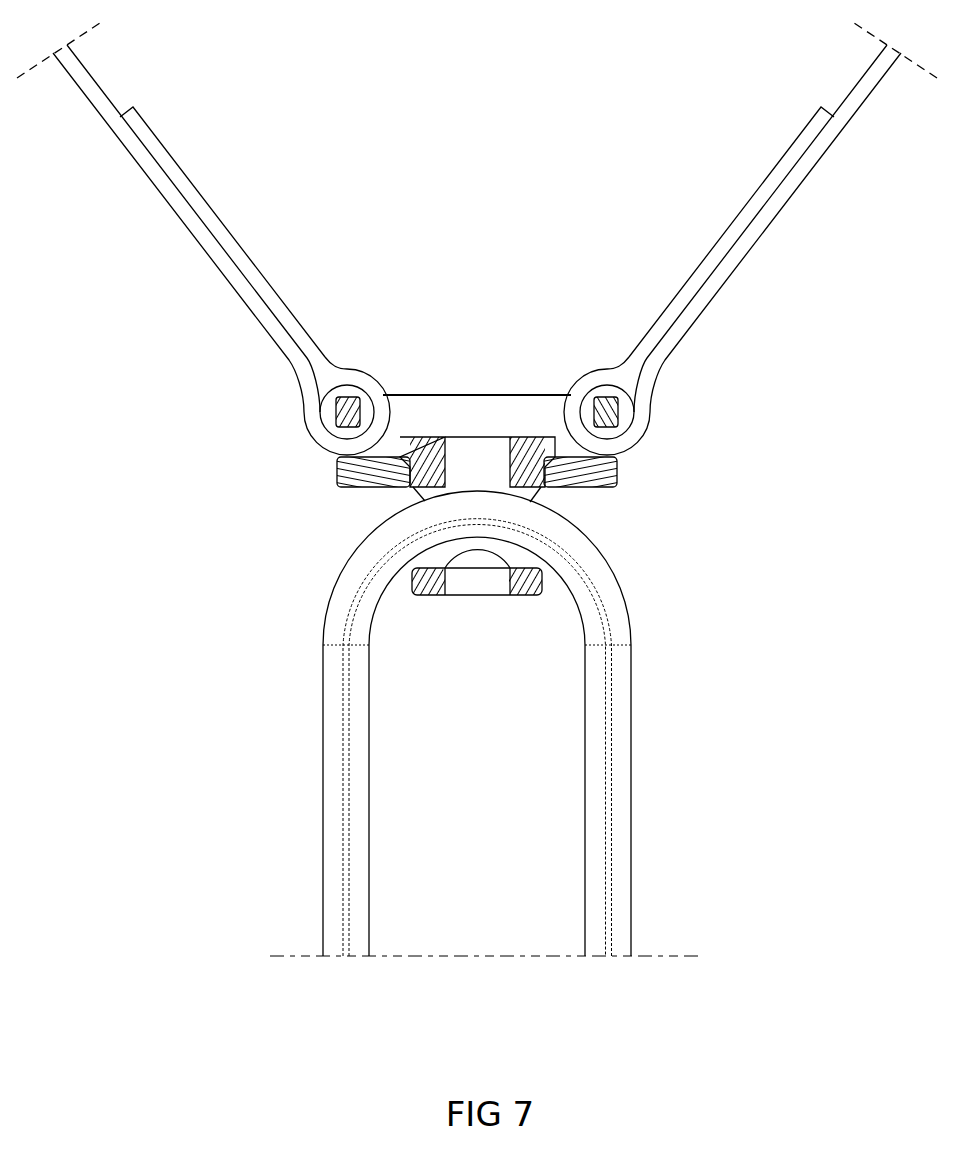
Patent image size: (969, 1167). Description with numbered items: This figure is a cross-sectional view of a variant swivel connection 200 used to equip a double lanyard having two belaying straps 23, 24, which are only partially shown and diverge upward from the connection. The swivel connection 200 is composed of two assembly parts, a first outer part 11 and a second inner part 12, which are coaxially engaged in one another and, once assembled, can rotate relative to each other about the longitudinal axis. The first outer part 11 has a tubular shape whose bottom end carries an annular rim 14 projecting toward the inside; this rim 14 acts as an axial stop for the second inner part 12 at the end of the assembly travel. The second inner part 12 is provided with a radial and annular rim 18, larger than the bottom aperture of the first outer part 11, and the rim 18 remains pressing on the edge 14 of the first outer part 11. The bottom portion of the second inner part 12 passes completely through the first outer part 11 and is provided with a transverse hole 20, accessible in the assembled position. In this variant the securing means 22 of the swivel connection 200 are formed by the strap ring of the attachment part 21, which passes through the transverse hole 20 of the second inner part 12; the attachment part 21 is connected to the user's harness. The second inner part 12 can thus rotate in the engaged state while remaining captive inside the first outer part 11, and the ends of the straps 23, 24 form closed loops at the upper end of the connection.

The first outer part 11 is at (601, 496).
The second inner part 12 is at (460, 615).
The annular rim 14 is at (330, 503).
The radial and annular rim 18 is at (477, 406).
The transverse hole 20 is at (496, 606).
The attachment part 21 is at (539, 746).
The securing means 22 is at (420, 723).
The belaying strap 23 is at (171, 217).
The belaying strap 24 is at (783, 217).
The swivel connection 200 is at (150, 739).